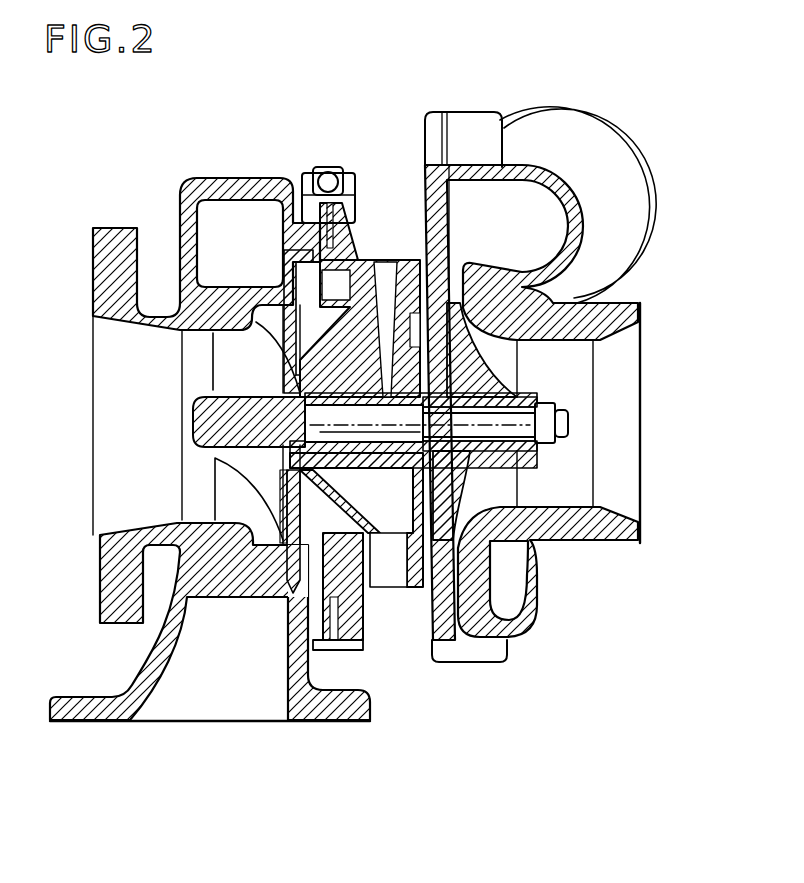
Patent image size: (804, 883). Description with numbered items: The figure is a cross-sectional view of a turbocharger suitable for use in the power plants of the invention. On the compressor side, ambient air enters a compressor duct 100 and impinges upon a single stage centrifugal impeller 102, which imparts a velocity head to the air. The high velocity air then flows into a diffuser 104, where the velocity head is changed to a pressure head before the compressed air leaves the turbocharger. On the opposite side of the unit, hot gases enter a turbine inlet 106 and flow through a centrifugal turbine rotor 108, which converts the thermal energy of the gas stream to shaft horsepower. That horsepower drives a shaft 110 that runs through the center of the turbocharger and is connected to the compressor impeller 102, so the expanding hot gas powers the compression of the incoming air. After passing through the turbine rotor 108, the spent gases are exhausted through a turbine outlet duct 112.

The compressor duct 100 is at (622, 514).
The single stage centrifugal impeller 102 is at (507, 480).
The diffuser 104 is at (540, 197).
The turbine inlet 106 is at (207, 687).
The centrifugal turbine rotor 108 is at (226, 362).
The shaft 110 is at (355, 396).
The turbine outlet duct 112 is at (127, 527).